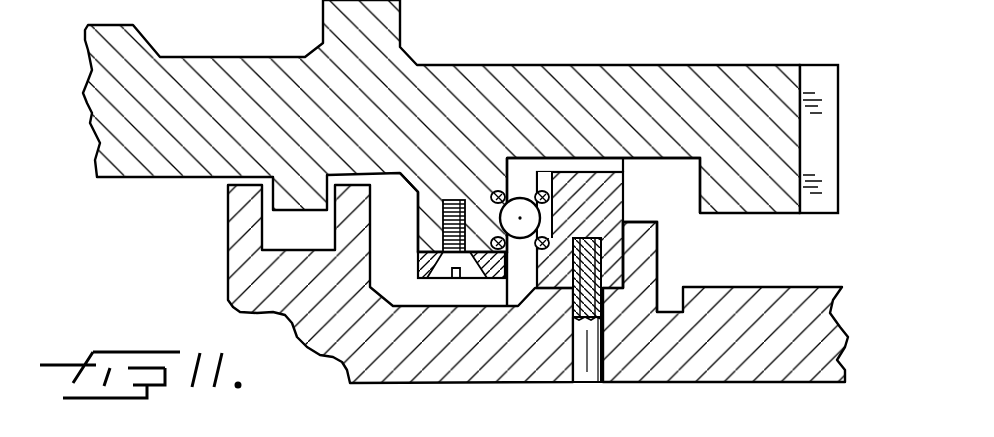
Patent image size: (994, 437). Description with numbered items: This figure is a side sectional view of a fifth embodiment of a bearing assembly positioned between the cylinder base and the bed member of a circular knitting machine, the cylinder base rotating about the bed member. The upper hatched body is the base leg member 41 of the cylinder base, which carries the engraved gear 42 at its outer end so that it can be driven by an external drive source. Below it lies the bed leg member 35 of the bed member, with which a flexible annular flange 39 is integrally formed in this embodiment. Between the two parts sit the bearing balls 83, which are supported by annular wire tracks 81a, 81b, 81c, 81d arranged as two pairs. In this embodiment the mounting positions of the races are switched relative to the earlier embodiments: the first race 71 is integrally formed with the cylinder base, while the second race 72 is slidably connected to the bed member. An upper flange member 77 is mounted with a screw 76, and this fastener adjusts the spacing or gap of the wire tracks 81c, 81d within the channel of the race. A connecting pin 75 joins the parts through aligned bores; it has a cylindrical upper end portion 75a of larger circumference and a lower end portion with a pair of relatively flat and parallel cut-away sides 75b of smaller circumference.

The base leg member 41 is at (252, 72).
The engraved gear 42 is at (847, 36).
The first race 71 is at (420, 222).
The second race 72 is at (646, 152).
The annular wire track 81a is at (490, 238).
The annular wire track 81b is at (496, 192).
The annular wire track 81c is at (549, 195).
The annular wire track 81d is at (603, 190).
The bearing balls 83 is at (520, 197).
The flexible annular flange 39 is at (643, 243).
The flat and parallel sides 75b is at (598, 264).
The connecting pin 75 is at (590, 374).
The cylindrical upper end portion 75a is at (570, 348).
The bed leg member 35 is at (737, 367).
The screw 76 is at (433, 312).
The upper flange member 77 is at (498, 280).